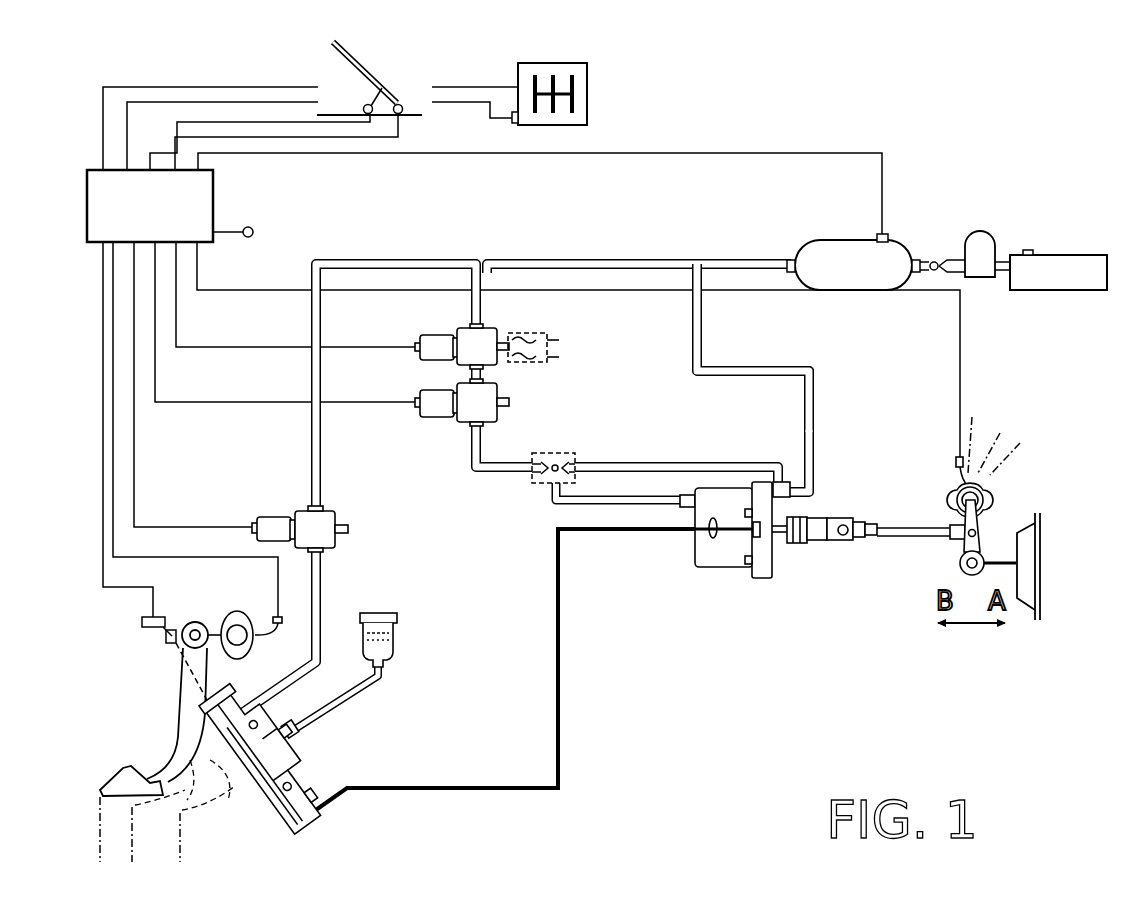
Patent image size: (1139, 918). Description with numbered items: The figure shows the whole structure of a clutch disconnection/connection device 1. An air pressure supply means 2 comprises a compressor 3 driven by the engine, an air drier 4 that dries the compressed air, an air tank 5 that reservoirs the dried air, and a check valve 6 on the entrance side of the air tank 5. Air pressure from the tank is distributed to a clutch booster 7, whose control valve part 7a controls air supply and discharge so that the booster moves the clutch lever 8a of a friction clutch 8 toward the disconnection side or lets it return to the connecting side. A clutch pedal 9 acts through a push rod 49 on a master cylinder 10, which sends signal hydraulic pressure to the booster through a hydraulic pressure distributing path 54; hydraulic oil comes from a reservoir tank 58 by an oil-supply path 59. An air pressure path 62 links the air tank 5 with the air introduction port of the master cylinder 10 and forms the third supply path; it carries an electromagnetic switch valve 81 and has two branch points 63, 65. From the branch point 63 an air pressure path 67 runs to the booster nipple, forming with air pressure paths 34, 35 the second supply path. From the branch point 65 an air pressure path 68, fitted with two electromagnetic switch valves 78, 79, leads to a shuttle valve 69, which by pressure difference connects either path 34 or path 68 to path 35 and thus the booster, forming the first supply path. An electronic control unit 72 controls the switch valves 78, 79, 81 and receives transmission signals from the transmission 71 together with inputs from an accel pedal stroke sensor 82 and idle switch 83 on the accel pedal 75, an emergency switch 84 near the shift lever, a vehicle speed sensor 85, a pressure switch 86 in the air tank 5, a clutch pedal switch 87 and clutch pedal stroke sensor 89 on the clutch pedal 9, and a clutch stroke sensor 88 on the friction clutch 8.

The clutch disconnection/connection device 1 is at (831, 135).
The air pressure supply means 2 is at (1013, 217).
The compressor 3 is at (1073, 254).
The air drier 4 is at (986, 245).
The air tank 5 is at (836, 252).
The check valve 6 is at (943, 255).
The clutch booster 7 is at (822, 525).
The control valve part 7a is at (790, 470).
The friction clutch 8 is at (1026, 618).
The clutch lever 8a is at (960, 553).
The clutch pedal 9 is at (187, 737).
The master cylinder 10 is at (306, 770).
The air pressure path 34 is at (674, 465).
The air pressure path 35 is at (553, 501).
The push rod 49 is at (193, 678).
The hydraulic pressure distributing path 54 is at (562, 703).
The reservoir tank 58 is at (396, 647).
The oil-supply path 59 is at (353, 699).
The air pressure path 62 is at (312, 463).
The branch point 63 is at (706, 276).
The branch point 65 is at (470, 270).
The air pressure path 67 is at (752, 377).
The air pressure path 68 is at (472, 460).
The shuttle valve 69 is at (554, 453).
The transmission 71 is at (589, 102).
The electronic control unit 72 is at (165, 222).
The accel pedal 75 is at (366, 65).
The electromagnetic switch valve 78 is at (498, 331).
The electromagnetic switch valve 79 is at (511, 403).
The electromagnetic switch valve 81 is at (350, 517).
The accel pedal stroke sensor 82 is at (400, 104).
The idle switch 83 is at (362, 103).
The emergency switch 84 is at (514, 124).
The vehicle speed sensor 85 is at (255, 233).
The pressure switch 86 is at (890, 237).
The clutch pedal switch 87 is at (167, 617).
The clutch stroke sensor 88 is at (947, 496).
The clutch pedal stroke sensor 89 is at (247, 614).